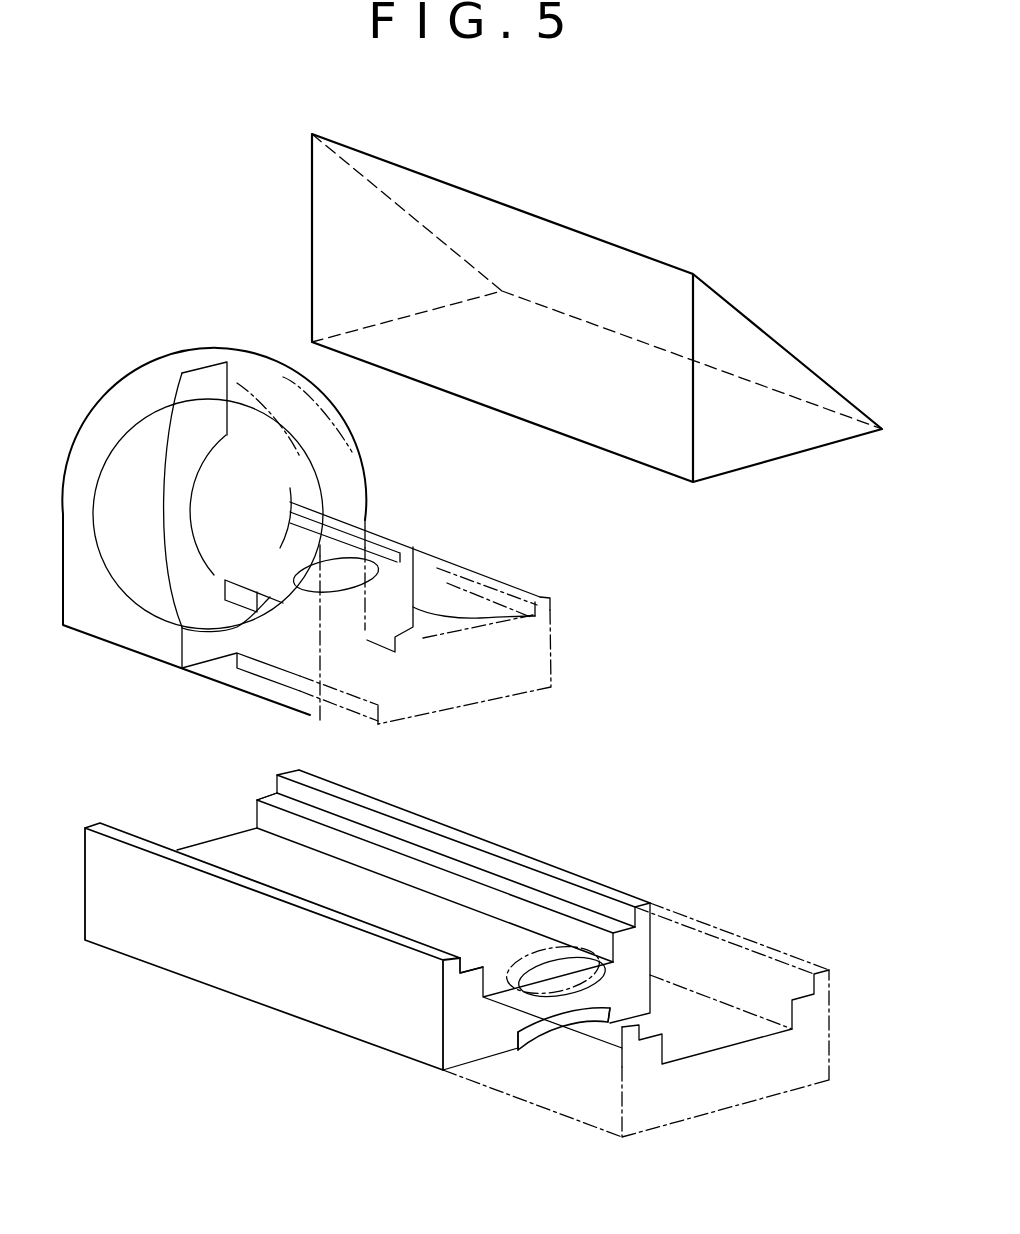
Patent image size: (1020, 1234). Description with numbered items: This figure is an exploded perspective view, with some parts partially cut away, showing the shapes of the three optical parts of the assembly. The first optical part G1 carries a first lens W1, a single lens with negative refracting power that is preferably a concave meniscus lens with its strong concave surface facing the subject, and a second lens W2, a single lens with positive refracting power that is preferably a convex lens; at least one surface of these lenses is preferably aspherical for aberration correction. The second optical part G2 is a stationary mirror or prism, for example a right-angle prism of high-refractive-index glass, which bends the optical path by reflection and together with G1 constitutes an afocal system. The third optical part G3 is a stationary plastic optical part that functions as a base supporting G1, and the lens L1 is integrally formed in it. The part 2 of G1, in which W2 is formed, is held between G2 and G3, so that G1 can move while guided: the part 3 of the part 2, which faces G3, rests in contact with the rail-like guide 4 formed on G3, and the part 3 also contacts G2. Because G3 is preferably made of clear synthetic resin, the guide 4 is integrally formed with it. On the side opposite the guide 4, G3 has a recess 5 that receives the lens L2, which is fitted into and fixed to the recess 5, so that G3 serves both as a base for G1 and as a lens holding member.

The first optical part G1 is at (182, 373).
The second optical part G2 is at (598, 272).
The third optical part G3 is at (355, 1043).
The first lens W1 is at (125, 448).
The second lens W2 is at (340, 572).
The lens L1 is at (568, 973).
The lens L2 is at (533, 1040).
The part of G1 2 is at (540, 616).
The part of part 2 3 is at (237, 656).
The rail-like guide 4 is at (517, 888).
The recess 5 is at (597, 1028).